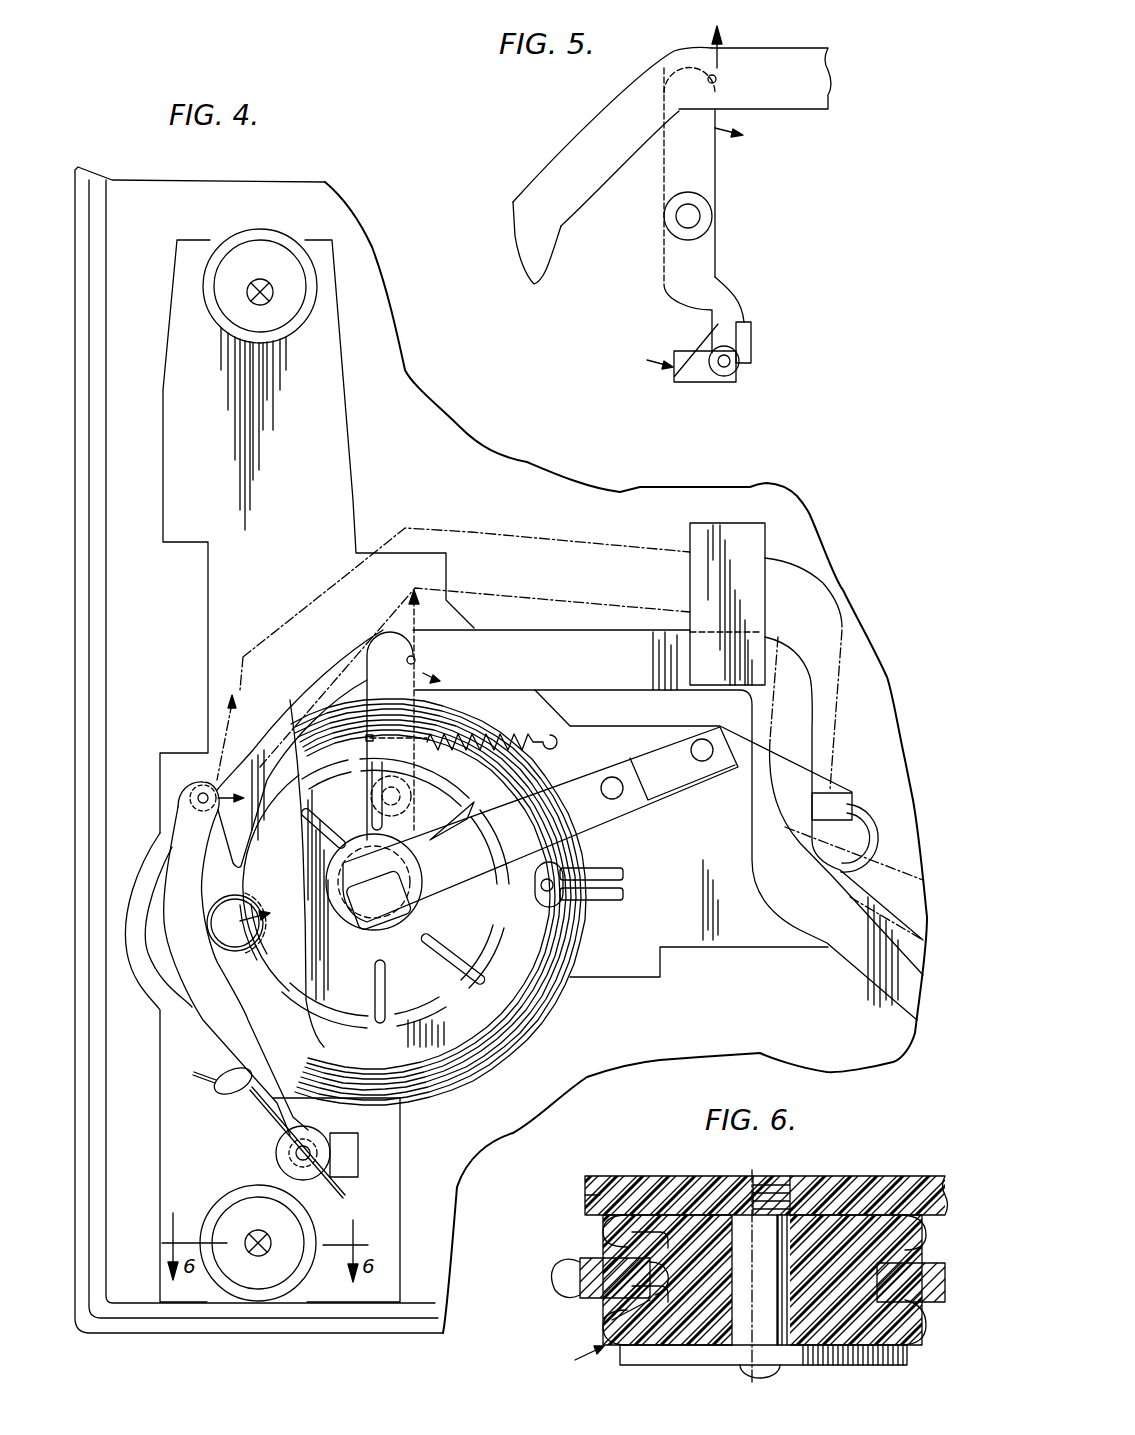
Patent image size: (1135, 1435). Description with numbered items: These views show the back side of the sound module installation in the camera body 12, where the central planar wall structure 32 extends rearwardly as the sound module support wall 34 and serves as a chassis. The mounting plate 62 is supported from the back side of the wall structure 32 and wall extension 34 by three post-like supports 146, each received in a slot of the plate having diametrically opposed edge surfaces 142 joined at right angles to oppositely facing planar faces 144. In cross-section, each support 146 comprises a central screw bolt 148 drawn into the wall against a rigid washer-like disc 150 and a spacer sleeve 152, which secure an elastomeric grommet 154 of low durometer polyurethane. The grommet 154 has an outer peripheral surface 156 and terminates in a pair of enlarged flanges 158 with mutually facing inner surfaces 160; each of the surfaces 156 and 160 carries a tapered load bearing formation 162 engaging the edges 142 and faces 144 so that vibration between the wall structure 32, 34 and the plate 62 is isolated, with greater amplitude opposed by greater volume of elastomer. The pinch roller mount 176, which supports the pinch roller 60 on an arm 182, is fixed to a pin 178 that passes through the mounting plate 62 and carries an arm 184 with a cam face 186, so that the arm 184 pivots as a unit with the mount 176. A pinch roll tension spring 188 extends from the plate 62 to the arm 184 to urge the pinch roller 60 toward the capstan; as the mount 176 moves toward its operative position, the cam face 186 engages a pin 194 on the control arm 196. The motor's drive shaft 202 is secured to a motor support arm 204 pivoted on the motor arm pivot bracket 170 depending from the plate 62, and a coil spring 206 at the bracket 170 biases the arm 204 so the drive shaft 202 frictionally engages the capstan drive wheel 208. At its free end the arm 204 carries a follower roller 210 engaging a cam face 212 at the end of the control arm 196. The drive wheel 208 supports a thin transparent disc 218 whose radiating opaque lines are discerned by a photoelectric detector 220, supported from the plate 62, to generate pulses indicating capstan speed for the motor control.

In FIG. 4, the camera body 12 is at (75, 665).
In FIG. 4, the wall structure 32 is at (645, 522).
In FIG. 6, the wall structure 32 is at (680, 1180).
In FIG. 4, the sound module support wall 34 is at (183, 656).
In FIG. 5, the pinch roller 60 is at (722, 399).
In FIG. 4, the mounting plate 62 is at (303, 449).
In FIG. 6, the mounting plate 62 is at (932, 1302).
In FIG. 6, the edge surfaces 142 is at (660, 1275).
In FIG. 6, the planar faces 144 is at (600, 1278).
In FIG. 4, the post-like supports 146 is at (284, 268).
In FIG. 6, the post-like supports 146 is at (573, 1360).
In FIG. 6, the screw bolt 148 is at (767, 1180).
In FIG. 6, the washer-like disc 150 is at (640, 1357).
In FIG. 6, the spacer sleeve 152 is at (797, 1230).
In FIG. 6, the elastomeric grommet 154 is at (837, 1307).
In FIG. 6, the outer peripheral surface 156 is at (863, 1258).
In FIG. 6, the flanges 158 is at (605, 1227).
In FIG. 6, the inner surfaces 160 is at (680, 1258).
In FIG. 6, the tapered load bearing formation 162 is at (630, 1287).
In FIG. 4, the motor arm pivot bracket 170 is at (353, 1158).
In FIG. 5, the pinch roller mount 176 is at (690, 386).
In FIG. 4, the pin 178 is at (391, 796).
In FIG. 5, the pin 178 is at (689, 214).
In FIG. 4, the arm 182 is at (540, 824).
In FIG. 5, the arm 182 is at (724, 301).
In FIG. 4, the arm 184 is at (413, 713).
In FIG. 5, the arm 184 is at (701, 152).
In FIG. 5, the cam face 186 is at (705, 74).
In FIG. 4, the pinch roll tension spring 188 is at (550, 736).
In FIG. 4, the pin 194 is at (415, 658).
In FIG. 5, the pin 194 is at (718, 79).
In FIG. 4, the control arm 196 is at (600, 676).
In FIG. 5, the control arm 196 is at (596, 181).
In FIG. 4, the drive shaft 202 is at (232, 953).
In FIG. 4, the motor support arm 204 is at (230, 1038).
In FIG. 4, the coil spring 206 is at (313, 1130).
In FIG. 4, the drive wheel 208 is at (290, 873).
In FIG. 4, the follower roller 210 is at (203, 786).
In FIG. 4, the cam face 212 is at (218, 823).
In FIG. 5, the cam face 212 is at (518, 253).
In FIG. 4, the transparent disc 218 is at (513, 940).
In FIG. 4, the photoelectric detector 220 is at (610, 908).